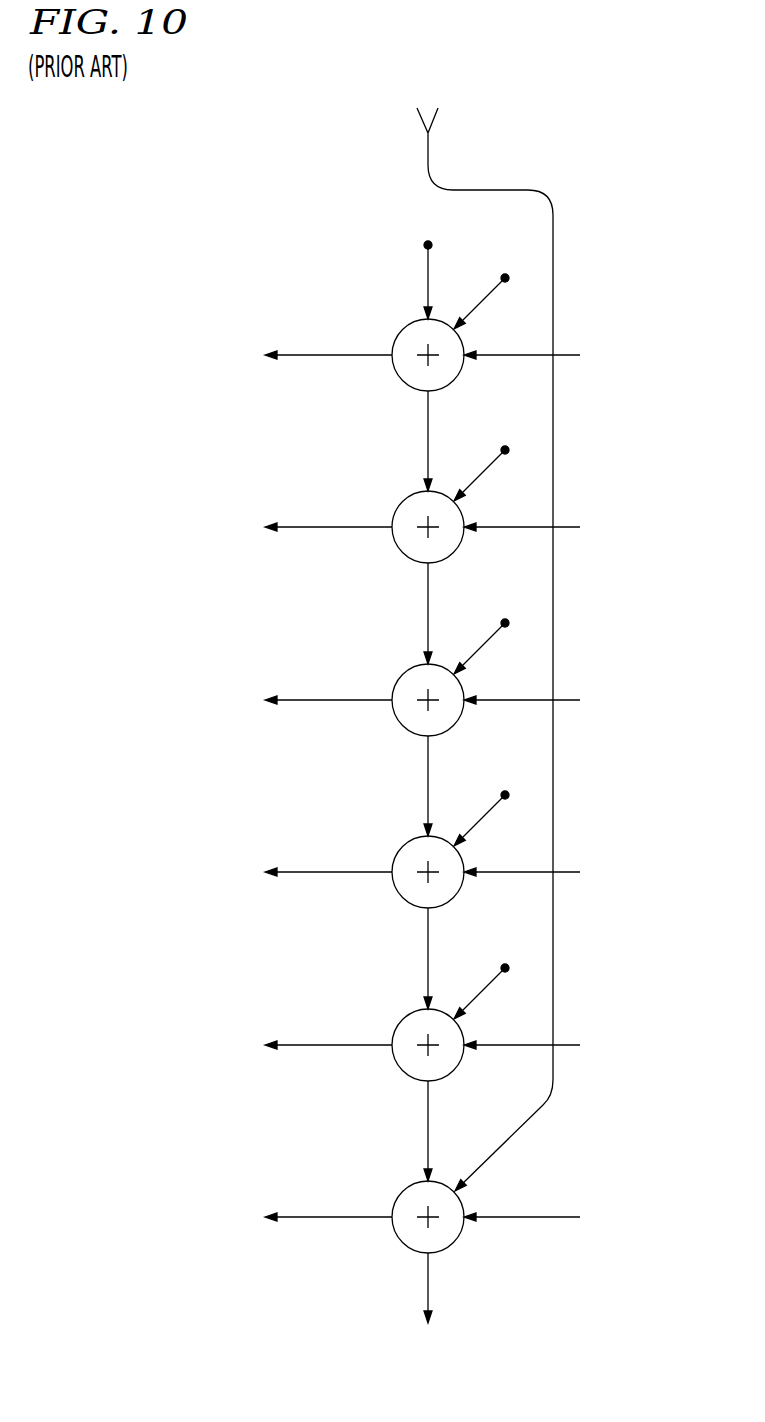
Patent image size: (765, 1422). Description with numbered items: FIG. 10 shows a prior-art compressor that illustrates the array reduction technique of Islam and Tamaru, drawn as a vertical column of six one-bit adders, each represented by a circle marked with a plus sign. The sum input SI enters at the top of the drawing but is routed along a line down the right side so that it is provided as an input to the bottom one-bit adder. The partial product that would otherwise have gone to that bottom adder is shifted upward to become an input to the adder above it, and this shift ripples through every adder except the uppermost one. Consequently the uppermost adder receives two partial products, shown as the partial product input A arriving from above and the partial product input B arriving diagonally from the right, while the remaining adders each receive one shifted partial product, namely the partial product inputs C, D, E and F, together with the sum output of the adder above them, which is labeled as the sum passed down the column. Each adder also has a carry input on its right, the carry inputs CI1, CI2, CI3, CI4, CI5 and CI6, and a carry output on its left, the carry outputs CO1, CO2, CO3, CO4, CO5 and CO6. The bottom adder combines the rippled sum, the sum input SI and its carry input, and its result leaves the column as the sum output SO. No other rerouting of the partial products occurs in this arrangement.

The serial input SI is at (484, 631).
The serial output SO is at (412, 1308).
The input A is at (428, 263).
The input B is at (494, 289).
The input C is at (494, 461).
The input D is at (495, 634).
The input E is at (493, 806).
The input F is at (492, 979).
The carry out 1 CO1 is at (307, 355).
The carry out 2 CO2 is at (307, 527).
The carry out 3 CO3 is at (307, 700).
The carry out 4 CO4 is at (307, 872).
The carry out 5 CO5 is at (307, 1045).
The carry out 6 CO6 is at (307, 1217).
The carry in 1 CI1 is at (547, 358).
The carry in 2 CI2 is at (547, 530).
The carry in 3 CI3 is at (547, 703).
The carry in 4 CI4 is at (547, 875).
The carry in 5 CI5 is at (547, 1048).
The carry in 6 CI6 is at (547, 1220).